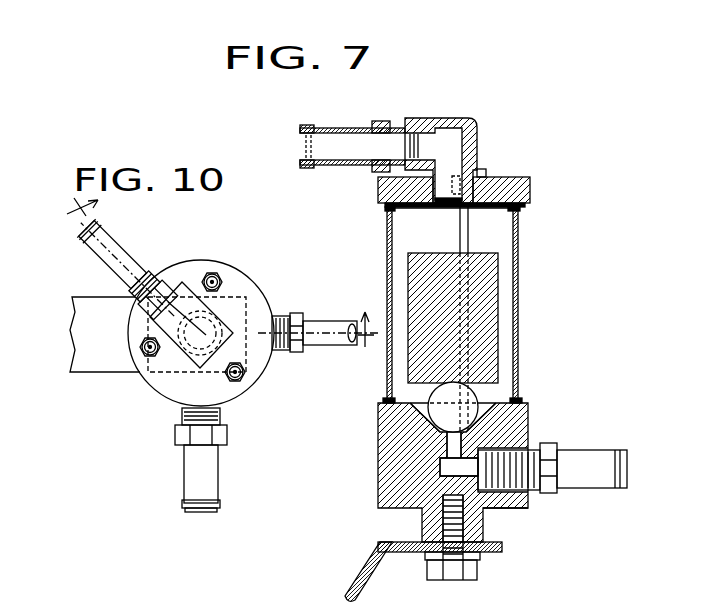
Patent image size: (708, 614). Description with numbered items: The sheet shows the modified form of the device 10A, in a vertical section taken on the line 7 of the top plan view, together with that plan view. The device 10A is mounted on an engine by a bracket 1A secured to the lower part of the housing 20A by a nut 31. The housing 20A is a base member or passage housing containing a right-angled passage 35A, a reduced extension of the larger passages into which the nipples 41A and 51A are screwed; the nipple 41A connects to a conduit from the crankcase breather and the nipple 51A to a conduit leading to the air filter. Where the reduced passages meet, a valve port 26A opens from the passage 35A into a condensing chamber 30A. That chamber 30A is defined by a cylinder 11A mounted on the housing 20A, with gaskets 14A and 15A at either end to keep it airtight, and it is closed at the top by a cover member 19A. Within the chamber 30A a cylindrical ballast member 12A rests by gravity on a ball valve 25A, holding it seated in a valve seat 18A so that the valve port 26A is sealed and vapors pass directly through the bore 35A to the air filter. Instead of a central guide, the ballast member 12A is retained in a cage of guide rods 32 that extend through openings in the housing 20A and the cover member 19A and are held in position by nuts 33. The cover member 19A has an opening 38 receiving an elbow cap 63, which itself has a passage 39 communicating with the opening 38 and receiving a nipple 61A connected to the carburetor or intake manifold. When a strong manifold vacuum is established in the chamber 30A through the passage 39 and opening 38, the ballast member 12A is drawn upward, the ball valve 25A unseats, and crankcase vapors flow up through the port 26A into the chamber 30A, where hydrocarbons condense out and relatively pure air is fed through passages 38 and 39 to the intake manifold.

In FIG. 7, the bracket 1A is at (363, 570).
In FIG. 10, the bracket 1A is at (100, 305).
In FIG. 7, the section line 7— 7 is at (366, 340).
In FIG. 10, the section line 7— 7 is at (80, 215).
In FIG. 7, the modified form of the device 10A is at (545, 146).
In FIG. 7, the cylinder 11A is at (519, 297).
In FIG. 7, the ballast member 12A is at (480, 345).
In FIG. 7, the gasket 14A is at (527, 407).
In FIG. 7, the gasket 15A is at (520, 208).
In FIG. 7, the valve seat 18A is at (422, 414).
In FIG. 7, the cover member 19A is at (532, 182).
In FIG. 10, the cover member 19A is at (270, 316).
In FIG. 7, the housing 20A is at (527, 500).
In FIG. 7, the ball valve 25A is at (472, 395).
In FIG. 10, the ball valve 25A is at (246, 298).
In FIG. 7, the valve port 26A is at (440, 452).
In FIG. 7, the condensing chamber 30A is at (408, 240).
In FIG. 7, the nut 31 is at (474, 576).
In FIG. 7, the guide rods 32 is at (469, 242).
In FIG. 10, the guide rods 32 is at (218, 286).
In FIG. 7, the nuts 33 is at (483, 172).
In FIG. 10, the nuts 33 is at (210, 276).
In FIG. 7, the right-angled passage 35A is at (425, 480).
In FIG. 7, the opening 38 is at (440, 208).
In FIG. 7, the passage 39 is at (447, 190).
In FIG. 7, the nipple 41A is at (570, 458).
In FIG. 10, the nipple 41A is at (334, 348).
In FIG. 10, the nipple 51A is at (195, 470).
In FIG. 7, the nipple 61A is at (356, 128).
In FIG. 10, the nipple 61A is at (126, 242).
In FIG. 7, the elbow cap 63 is at (458, 121).
In FIG. 10, the elbow cap 63 is at (186, 356).